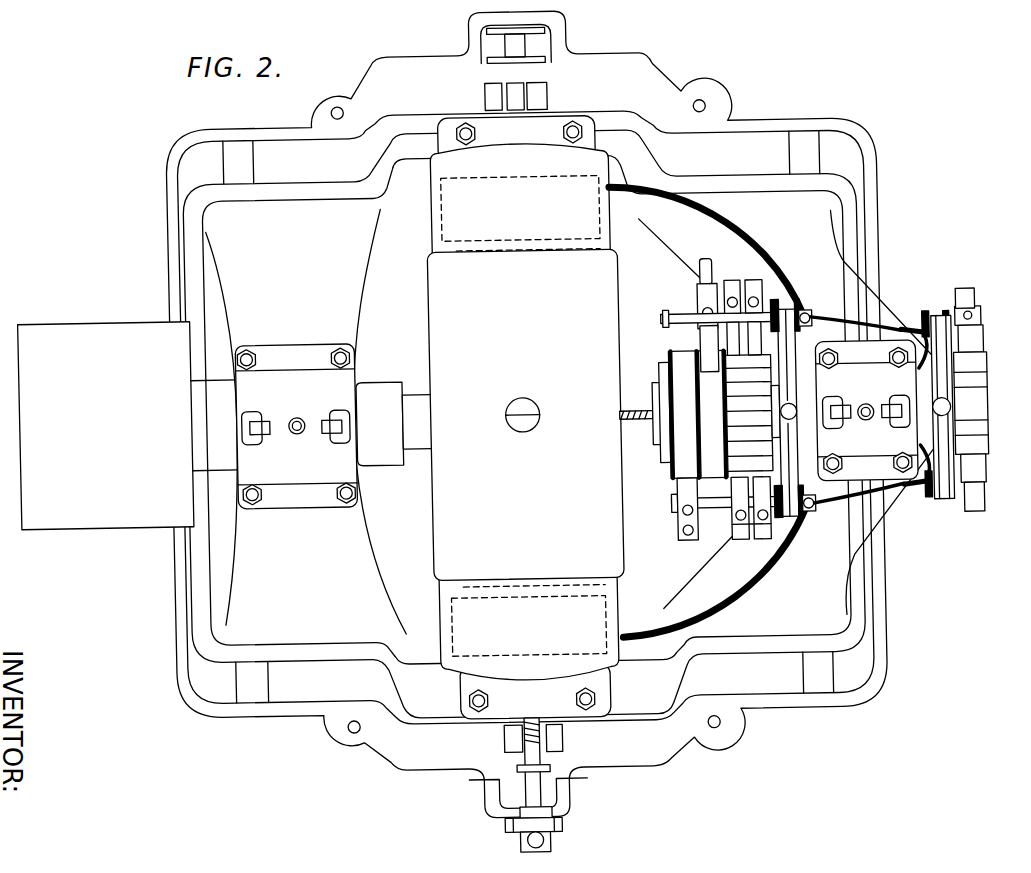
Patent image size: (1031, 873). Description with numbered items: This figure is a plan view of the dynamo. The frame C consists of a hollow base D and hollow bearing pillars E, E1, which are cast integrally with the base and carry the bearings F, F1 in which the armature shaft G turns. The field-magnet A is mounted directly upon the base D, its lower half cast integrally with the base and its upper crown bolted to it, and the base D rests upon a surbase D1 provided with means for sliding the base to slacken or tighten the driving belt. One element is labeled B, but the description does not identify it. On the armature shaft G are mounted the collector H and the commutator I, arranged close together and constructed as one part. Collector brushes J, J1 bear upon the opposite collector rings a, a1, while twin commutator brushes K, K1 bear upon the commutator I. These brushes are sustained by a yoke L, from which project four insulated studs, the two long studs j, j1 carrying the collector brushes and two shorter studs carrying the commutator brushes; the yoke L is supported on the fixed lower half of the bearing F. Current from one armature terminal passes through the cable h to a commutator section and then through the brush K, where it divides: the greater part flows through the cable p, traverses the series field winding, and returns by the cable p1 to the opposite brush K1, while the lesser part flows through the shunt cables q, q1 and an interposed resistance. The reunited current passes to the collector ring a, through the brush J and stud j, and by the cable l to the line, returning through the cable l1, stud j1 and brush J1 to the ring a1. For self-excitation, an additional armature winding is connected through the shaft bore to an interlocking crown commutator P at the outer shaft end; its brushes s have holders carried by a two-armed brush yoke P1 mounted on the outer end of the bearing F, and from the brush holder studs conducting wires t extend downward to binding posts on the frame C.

The field-magnet A is at (524, 417).
The field magnet B is at (430, 536).
The frame C is at (381, 313).
The hollow base D is at (394, 542).
The surbase D1 is at (581, 784).
The bearing pillar E is at (860, 412).
The bearing pillar E1 is at (266, 427).
The bearing F is at (866, 410).
The bearing F1 is at (296, 426).
The armature shaft G is at (411, 398).
The collector H is at (649, 401).
The cable h is at (637, 447).
The commutator I is at (753, 412).
The collector brush J is at (700, 292).
The collector brush J1 is at (676, 513).
The stud j is at (663, 320).
The stud j1 is at (718, 493).
The commutator brush K is at (756, 284).
The commutator brush K1 is at (761, 543).
The brush yoke L is at (809, 381).
The cable l is at (811, 310).
The cable l1 is at (810, 513).
The interlocking crown commutator P is at (987, 444).
The brush yoke P1 is at (943, 500).
The cable p is at (772, 262).
The cable p1 is at (747, 600).
The cable q is at (860, 323).
The cable q1 is at (877, 497).
The collector ring a is at (713, 413).
The collector ring a1 is at (684, 415).
The commutator brush s is at (979, 405).
The conducting wire t is at (927, 334).